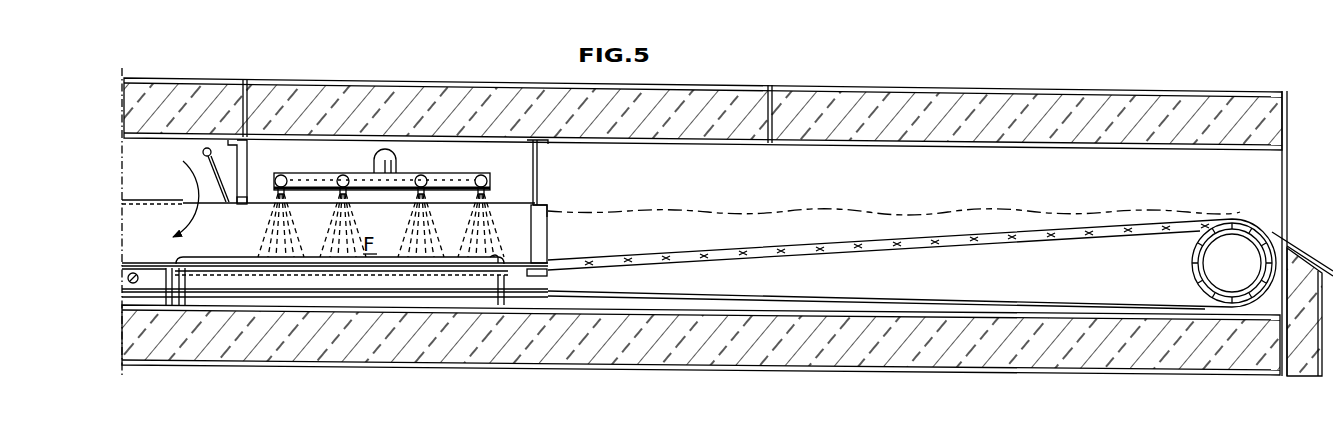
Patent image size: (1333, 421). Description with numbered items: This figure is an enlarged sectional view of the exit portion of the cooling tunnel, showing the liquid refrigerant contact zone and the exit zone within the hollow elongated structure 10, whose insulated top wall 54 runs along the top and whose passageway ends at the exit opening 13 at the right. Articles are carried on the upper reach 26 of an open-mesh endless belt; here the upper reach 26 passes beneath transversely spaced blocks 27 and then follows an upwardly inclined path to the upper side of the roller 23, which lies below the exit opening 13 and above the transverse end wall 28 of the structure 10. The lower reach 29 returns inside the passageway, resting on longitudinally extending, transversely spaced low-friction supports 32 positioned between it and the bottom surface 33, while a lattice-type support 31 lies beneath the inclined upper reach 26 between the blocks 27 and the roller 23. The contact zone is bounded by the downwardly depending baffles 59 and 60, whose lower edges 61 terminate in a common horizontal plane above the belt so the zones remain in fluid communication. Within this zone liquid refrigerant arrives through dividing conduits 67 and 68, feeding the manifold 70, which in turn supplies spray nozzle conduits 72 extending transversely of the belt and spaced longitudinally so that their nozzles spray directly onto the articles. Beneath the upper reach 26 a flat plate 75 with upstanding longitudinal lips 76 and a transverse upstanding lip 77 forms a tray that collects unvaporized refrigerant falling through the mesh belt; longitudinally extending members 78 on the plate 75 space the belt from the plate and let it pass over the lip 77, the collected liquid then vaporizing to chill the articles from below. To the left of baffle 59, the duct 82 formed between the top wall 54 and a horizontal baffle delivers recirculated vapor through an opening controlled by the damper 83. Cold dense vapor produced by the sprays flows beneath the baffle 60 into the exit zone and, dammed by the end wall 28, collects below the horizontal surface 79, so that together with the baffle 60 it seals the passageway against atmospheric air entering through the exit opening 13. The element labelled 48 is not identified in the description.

The hollow elongated structure 10 is at (300, 55).
The exit opening 13 is at (1292, 159).
The roller 23 is at (1192, 263).
The upper reach 26 is at (764, 245).
The blocks 27 is at (547, 243).
The transverse end wall 28 is at (1278, 296).
The lower reach 29 is at (838, 297).
The lattice-type support 31 is at (975, 242).
The supports 32 is at (297, 305).
The bottom surface 33 is at (488, 300).
The discharge chute 48 is at (1310, 256).
The top wall 54 is at (975, 148).
The baffle 59 is at (233, 172).
The baffle 60 is at (538, 170).
The lower edges 61 is at (243, 203).
The dividing conduit 67 is at (391, 158).
The dividing conduit 68 is at (374, 163).
The manifold 70 is at (470, 173).
The spray nozzle conduits 72 is at (282, 174).
The flat plate 75 is at (447, 274).
The longitudinal lips 76 is at (497, 257).
The transverse upstanding lip 77 is at (547, 275).
The longitudinally extending members 78 is at (236, 262).
The horizontal surface 79 is at (840, 206).
The duct 82 is at (148, 180).
The damper 83 is at (202, 158).